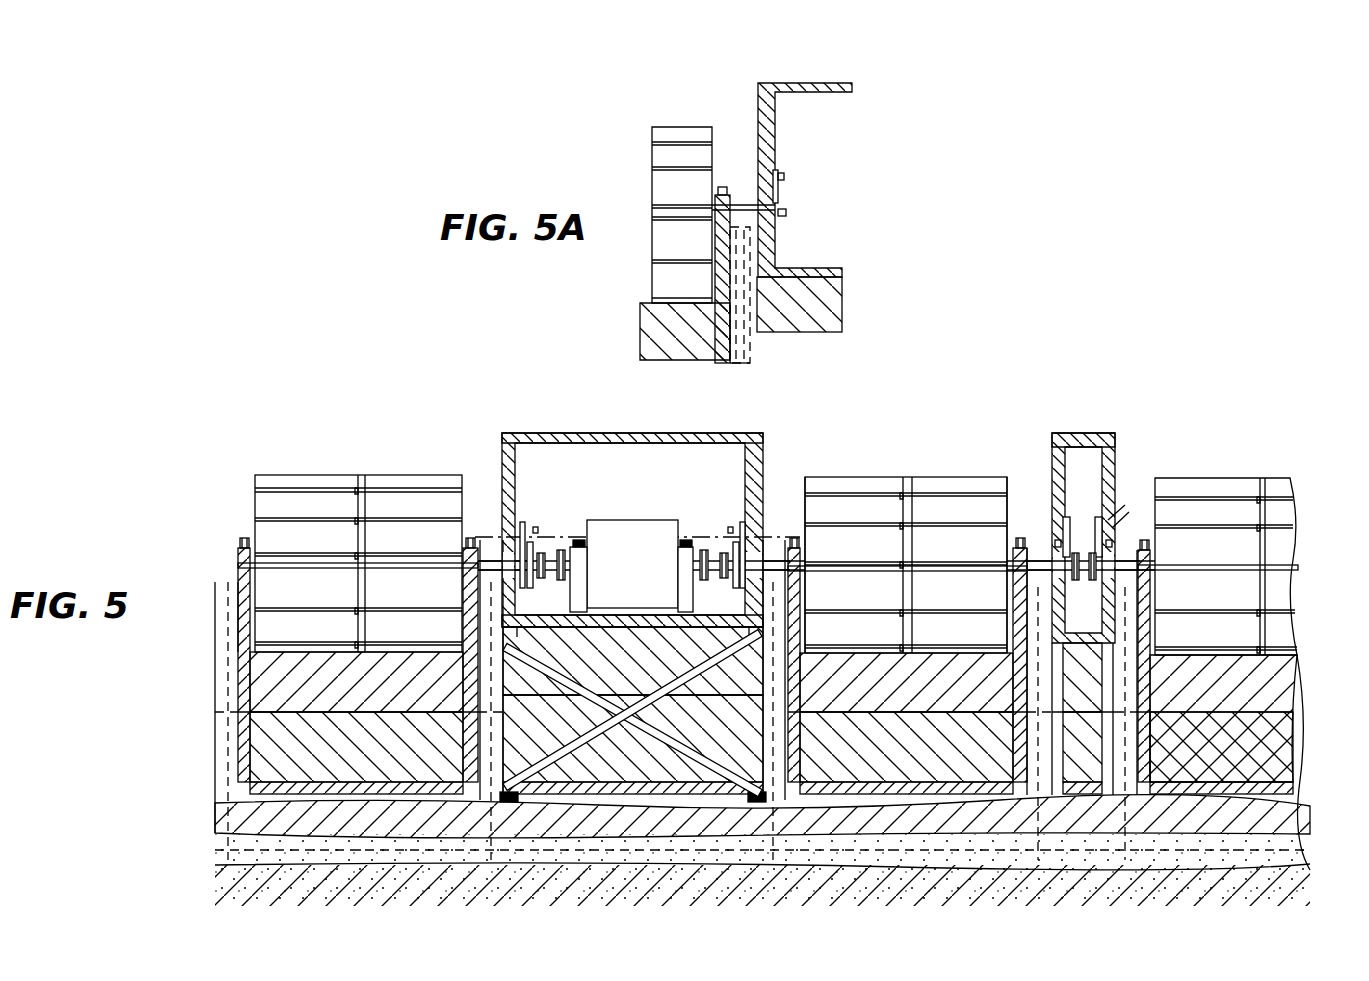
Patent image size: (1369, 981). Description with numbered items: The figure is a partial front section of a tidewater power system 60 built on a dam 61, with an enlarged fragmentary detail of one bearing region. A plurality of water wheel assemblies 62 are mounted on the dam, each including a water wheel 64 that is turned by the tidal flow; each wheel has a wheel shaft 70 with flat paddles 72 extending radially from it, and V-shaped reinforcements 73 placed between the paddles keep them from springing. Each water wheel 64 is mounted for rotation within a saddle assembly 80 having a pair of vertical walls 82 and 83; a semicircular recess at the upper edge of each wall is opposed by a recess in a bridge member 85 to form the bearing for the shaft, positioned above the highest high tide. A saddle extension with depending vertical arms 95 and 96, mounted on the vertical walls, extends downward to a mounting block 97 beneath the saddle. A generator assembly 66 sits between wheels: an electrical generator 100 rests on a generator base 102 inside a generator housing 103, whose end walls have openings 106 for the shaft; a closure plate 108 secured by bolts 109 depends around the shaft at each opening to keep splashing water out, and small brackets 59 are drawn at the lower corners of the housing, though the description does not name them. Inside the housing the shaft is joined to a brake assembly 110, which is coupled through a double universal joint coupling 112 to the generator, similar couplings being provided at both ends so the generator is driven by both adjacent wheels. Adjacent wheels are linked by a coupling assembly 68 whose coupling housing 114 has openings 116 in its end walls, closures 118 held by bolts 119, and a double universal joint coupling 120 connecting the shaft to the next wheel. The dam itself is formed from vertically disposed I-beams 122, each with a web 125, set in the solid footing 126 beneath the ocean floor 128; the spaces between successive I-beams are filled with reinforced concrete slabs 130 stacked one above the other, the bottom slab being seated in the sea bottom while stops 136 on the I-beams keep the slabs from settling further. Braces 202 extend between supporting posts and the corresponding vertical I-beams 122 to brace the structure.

In FIG. 5, the mounting bracket 59 is at (523, 620).
In FIG. 5, the tidewater power system 60 is at (884, 430).
In FIG. 5, the dam 61 is at (1305, 673).
In FIG. 5A, the dam 61 is at (897, 208).
In FIG. 5, the water wheel assembly 62 is at (278, 472).
In FIG. 5, the water wheel 64 is at (333, 475).
In FIG. 5A, the water wheel 64 is at (685, 127).
In FIG. 5, the generator assembly 66 is at (655, 430).
In FIG. 5, the coupling assembly 68 is at (1093, 426).
In FIG. 5, the wheel shaft 70 is at (830, 560).
In FIG. 5, the flat paddles 72 is at (958, 527).
In FIG. 5, the V-shaped reinforcements 73 is at (355, 500).
In FIG. 5A, the saddle assembly 80 is at (665, 360).
In FIG. 5, the vertical wall 82 is at (238, 560).
In FIG. 5, the vertical wall 83 is at (470, 600).
In FIG. 5A, the vertical wall 83 is at (715, 200).
In FIG. 5, the bridge member 85 is at (244, 538).
In FIG. 5, the vertical arm 95 is at (228, 600).
In FIG. 5A, the vertical arm 95 is at (752, 248).
In FIG. 5, the vertical arm 96 is at (488, 629).
In FIG. 5A, the vertical arm 96 is at (752, 362).
In FIG. 5, the mounting block 97 is at (446, 712).
In FIG. 5, the electrical generator 100 is at (610, 573).
In FIG. 5, the generator base 102 is at (580, 620).
In FIG. 5, the generator housing 103 is at (560, 433).
In FIG. 5A, the generator housing 103 is at (805, 83).
In FIG. 5, the openings 106 is at (522, 522).
In FIG. 5A, the openings 106 is at (780, 190).
In FIG. 5, the closure plate 108 is at (531, 542).
In FIG. 5A, the closure plate 108 is at (781, 170).
In FIG. 5, the bolts 109 is at (538, 530).
In FIG. 5A, the bolts 109 is at (788, 210).
In FIG. 5, the brake assembly 110 is at (629, 579).
In FIG. 5, the double universal joint coupling 112 is at (700, 555).
In FIG. 5, the coupling housing 114 is at (1058, 433).
In FIG. 5, the openings 116 is at (1057, 540).
In FIG. 5, the closures 118 is at (1098, 517).
In FIG. 5, the bolts 119 is at (1100, 525).
In FIG. 5, the double universal joint coupling 120 is at (1086, 580).
In FIG. 5, the I-beams 122 is at (228, 712).
In FIG. 5A, the web 125 is at (715, 278).
In FIG. 5, the solid footing 126 is at (1038, 933).
In FIG. 5, the ocean floor 128 is at (495, 895).
In FIG. 5, the slabs 130 is at (336, 753).
In FIG. 5A, the slabs 130 is at (800, 332).
In FIG. 5, the stops 136 is at (762, 816).
In FIG. 5, the braces 202 is at (668, 706).